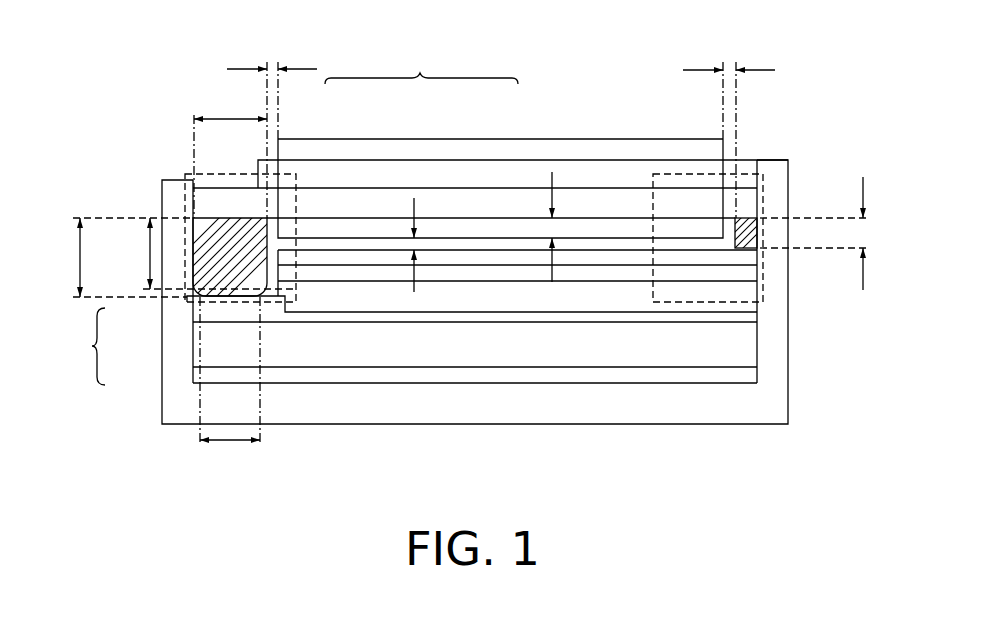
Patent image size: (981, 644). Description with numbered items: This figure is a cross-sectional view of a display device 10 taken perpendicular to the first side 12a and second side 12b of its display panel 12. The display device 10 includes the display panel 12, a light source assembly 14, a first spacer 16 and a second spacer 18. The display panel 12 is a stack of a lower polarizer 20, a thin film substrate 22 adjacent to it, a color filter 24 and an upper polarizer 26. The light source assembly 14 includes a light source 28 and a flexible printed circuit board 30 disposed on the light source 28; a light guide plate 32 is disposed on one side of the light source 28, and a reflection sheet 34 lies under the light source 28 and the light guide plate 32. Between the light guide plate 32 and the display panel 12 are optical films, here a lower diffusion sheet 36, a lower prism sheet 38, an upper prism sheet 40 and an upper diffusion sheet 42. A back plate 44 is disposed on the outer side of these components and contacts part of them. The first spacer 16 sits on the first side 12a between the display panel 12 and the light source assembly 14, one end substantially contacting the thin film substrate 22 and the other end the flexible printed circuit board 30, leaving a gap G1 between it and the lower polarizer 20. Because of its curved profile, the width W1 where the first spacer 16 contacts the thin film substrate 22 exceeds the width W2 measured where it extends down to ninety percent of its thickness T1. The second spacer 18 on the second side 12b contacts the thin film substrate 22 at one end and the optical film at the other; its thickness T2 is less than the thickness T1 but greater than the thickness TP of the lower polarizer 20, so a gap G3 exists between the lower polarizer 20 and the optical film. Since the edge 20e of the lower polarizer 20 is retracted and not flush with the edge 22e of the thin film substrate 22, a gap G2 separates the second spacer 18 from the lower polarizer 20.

The display device 10 is at (95, 77).
The display panel 12 is at (421, 61).
The first side 12a is at (186, 193).
The second side 12b is at (748, 153).
The light source assembly 14 is at (83, 346).
The first spacer 16 is at (220, 227).
The second spacer 18 is at (750, 230).
The lower polarizer 20 is at (347, 225).
The edge of the lower polarizer 20e is at (716, 229).
The thin film substrate 22 is at (395, 195).
The edge of the thin film substrate 22e is at (763, 195).
The color filter 24 is at (447, 170).
The upper polarizer 26 is at (495, 148).
The light source 28 is at (205, 350).
The flexible printed circuit board 30 is at (205, 312).
The light guide plate 32 is at (745, 343).
The reflection sheet 34 is at (745, 375).
The lower diffusion sheet 36 is at (483, 305).
The lower prism sheet 38 is at (532, 290).
The upper prism sheet 40 is at (582, 275).
The upper diffusion sheet 42 is at (630, 259).
The back plate 44 is at (775, 407).
The gap G1 is at (272, 125).
The gap G2 is at (729, 125).
The gap G3 is at (414, 205).
The width W1 is at (230, 152).
The width W2 is at (230, 390).
The thickness T1 is at (171, 257).
The thickness T2 is at (834, 233).
The thickness TP is at (553, 174).